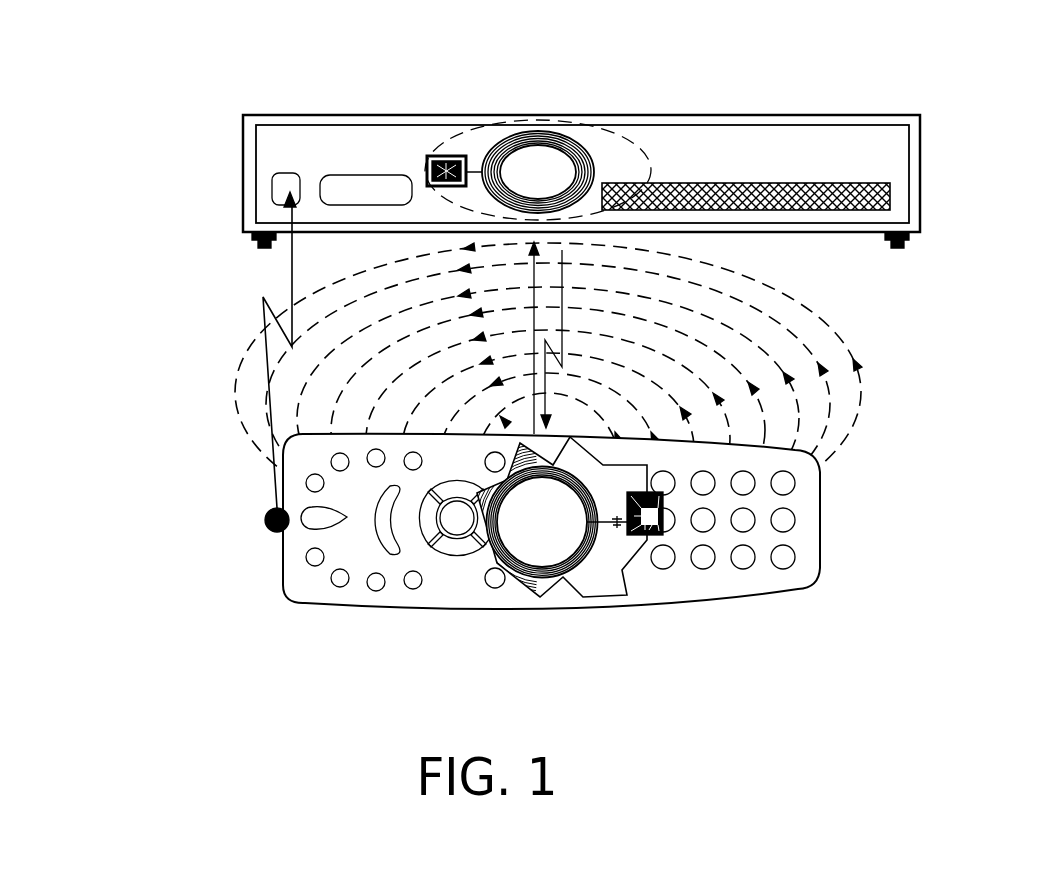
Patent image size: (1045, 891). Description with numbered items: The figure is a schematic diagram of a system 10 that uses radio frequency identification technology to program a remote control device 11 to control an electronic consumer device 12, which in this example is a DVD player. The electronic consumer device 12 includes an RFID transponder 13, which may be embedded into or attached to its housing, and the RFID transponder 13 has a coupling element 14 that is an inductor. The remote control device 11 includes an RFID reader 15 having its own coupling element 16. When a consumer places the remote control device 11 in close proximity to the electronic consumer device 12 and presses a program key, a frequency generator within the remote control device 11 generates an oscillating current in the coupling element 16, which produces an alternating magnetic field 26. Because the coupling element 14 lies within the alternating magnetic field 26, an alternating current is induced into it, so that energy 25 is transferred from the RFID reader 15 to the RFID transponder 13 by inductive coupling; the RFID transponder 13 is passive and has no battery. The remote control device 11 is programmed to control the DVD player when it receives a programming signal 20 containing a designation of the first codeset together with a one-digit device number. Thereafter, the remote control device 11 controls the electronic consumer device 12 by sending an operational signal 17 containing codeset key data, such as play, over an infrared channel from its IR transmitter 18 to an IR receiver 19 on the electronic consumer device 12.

The system 10 is at (146, 131).
The remote control device 11 is at (283, 571).
The electronic consumer device 12 is at (666, 115).
The RFID transponder 13 is at (427, 168).
The coupling element 14 is at (590, 166).
The RFID reader 15 is at (605, 584).
The coupling element 16 is at (548, 563).
The operational signal 17 is at (262, 316).
The IR transmitter 18 is at (265, 520).
The IR receiver 19 is at (290, 178).
The programming signal 20 is at (566, 355).
The energy 25 is at (533, 302).
The alternating magnetic field 26 is at (888, 375).